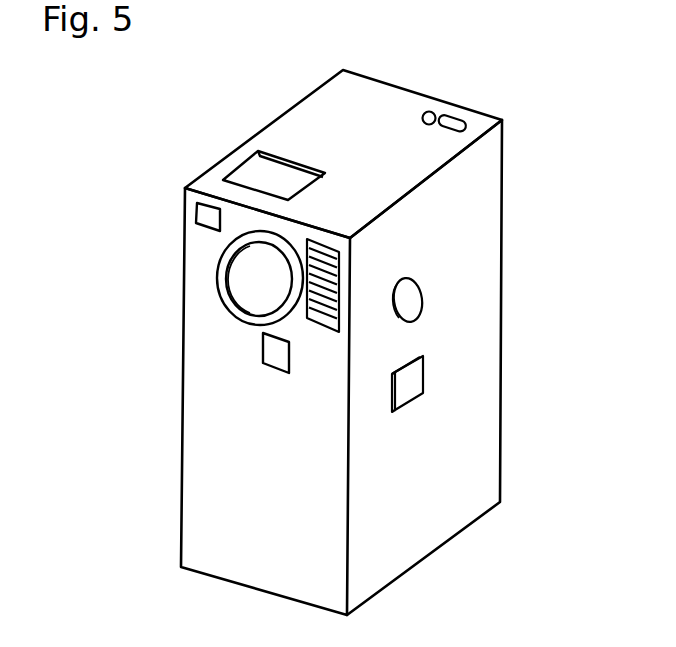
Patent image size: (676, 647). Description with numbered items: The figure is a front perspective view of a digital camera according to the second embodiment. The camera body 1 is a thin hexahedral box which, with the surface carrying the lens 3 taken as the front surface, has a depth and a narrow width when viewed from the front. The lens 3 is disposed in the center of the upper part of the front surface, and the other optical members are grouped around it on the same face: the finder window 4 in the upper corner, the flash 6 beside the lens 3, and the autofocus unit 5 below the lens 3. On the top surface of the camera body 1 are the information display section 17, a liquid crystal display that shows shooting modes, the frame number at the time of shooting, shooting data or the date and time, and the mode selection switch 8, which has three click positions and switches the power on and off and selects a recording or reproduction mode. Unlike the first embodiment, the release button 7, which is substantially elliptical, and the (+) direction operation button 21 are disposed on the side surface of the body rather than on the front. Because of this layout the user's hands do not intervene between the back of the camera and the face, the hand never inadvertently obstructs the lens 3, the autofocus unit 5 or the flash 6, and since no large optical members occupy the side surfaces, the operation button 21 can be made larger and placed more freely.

The camera body 1 is at (413, 537).
The lens 3 is at (250, 283).
The finder window 4 is at (211, 209).
The autofocus unit 5 is at (277, 349).
The flash 6 is at (333, 277).
The release button 7 is at (415, 298).
The mode selection switch 8 is at (447, 115).
The information display section 17 is at (262, 172).
The (+) direction operation button 21 is at (412, 380).